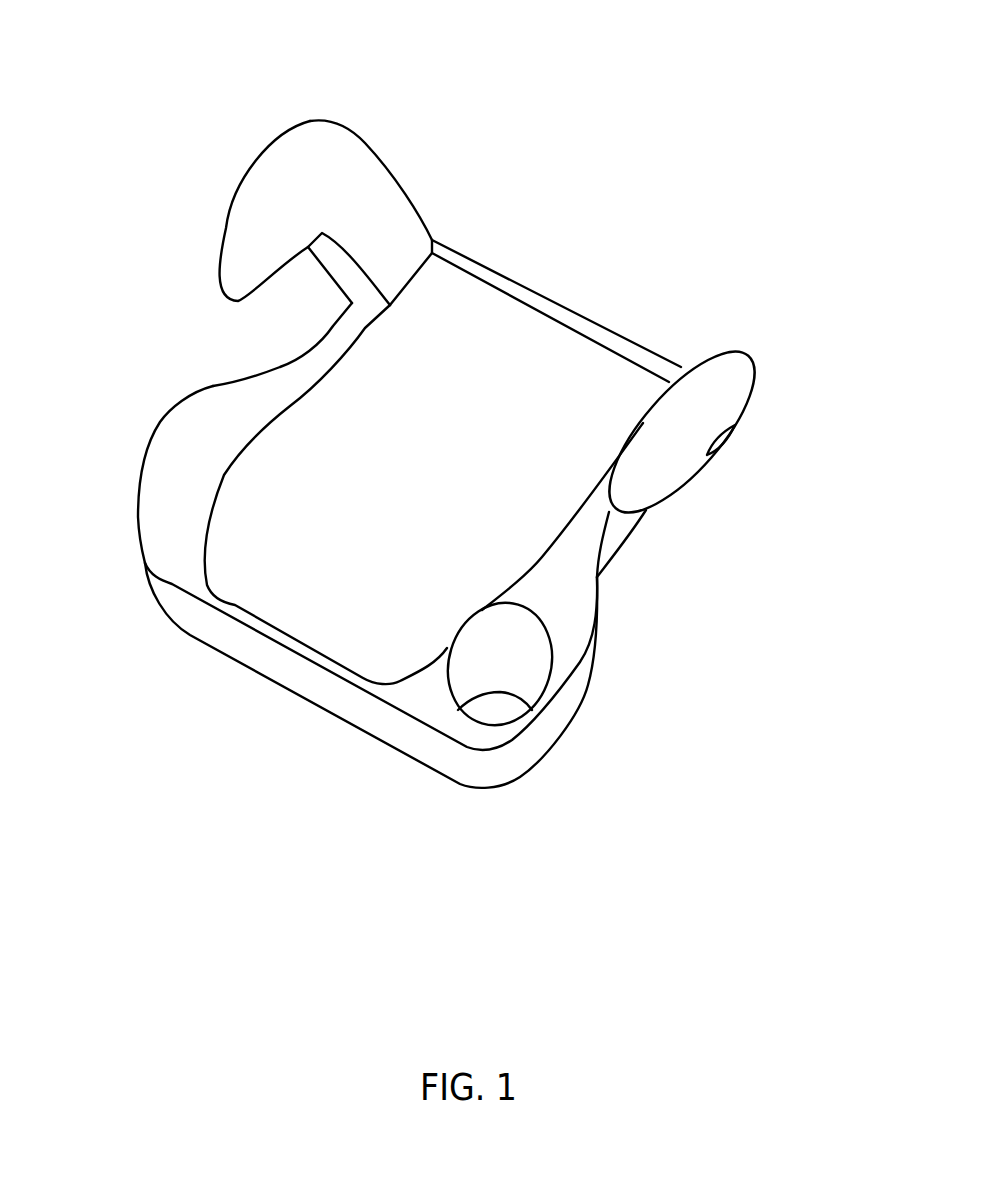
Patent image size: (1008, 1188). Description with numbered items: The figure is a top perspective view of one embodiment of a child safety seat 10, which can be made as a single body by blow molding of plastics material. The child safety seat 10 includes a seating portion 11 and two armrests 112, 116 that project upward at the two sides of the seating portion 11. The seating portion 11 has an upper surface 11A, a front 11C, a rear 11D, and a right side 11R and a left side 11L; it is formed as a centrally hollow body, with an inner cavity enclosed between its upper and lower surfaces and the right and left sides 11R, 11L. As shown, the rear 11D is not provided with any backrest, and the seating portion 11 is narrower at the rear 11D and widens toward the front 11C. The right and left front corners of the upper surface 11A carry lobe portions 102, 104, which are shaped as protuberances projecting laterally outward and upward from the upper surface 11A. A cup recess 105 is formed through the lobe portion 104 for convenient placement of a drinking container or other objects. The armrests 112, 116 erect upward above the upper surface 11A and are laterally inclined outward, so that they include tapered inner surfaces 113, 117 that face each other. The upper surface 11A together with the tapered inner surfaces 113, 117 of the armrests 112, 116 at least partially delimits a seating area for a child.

The child safety seat 10 is at (660, 130).
The seating portion 11 is at (303, 543).
The upper surface 11A is at (485, 315).
The rear 11D is at (582, 297).
The right side 11R is at (176, 360).
The left side 11L is at (668, 543).
The front 11C is at (240, 713).
The lobe portion 102 is at (180, 435).
The lobe portion 104 is at (570, 603).
The cup recess 105 is at (520, 702).
The armrest 112 is at (255, 230).
The tapered inner surface 113 is at (355, 160).
The armrest 116 is at (690, 402).
The tapered inner surface 117 is at (680, 367).